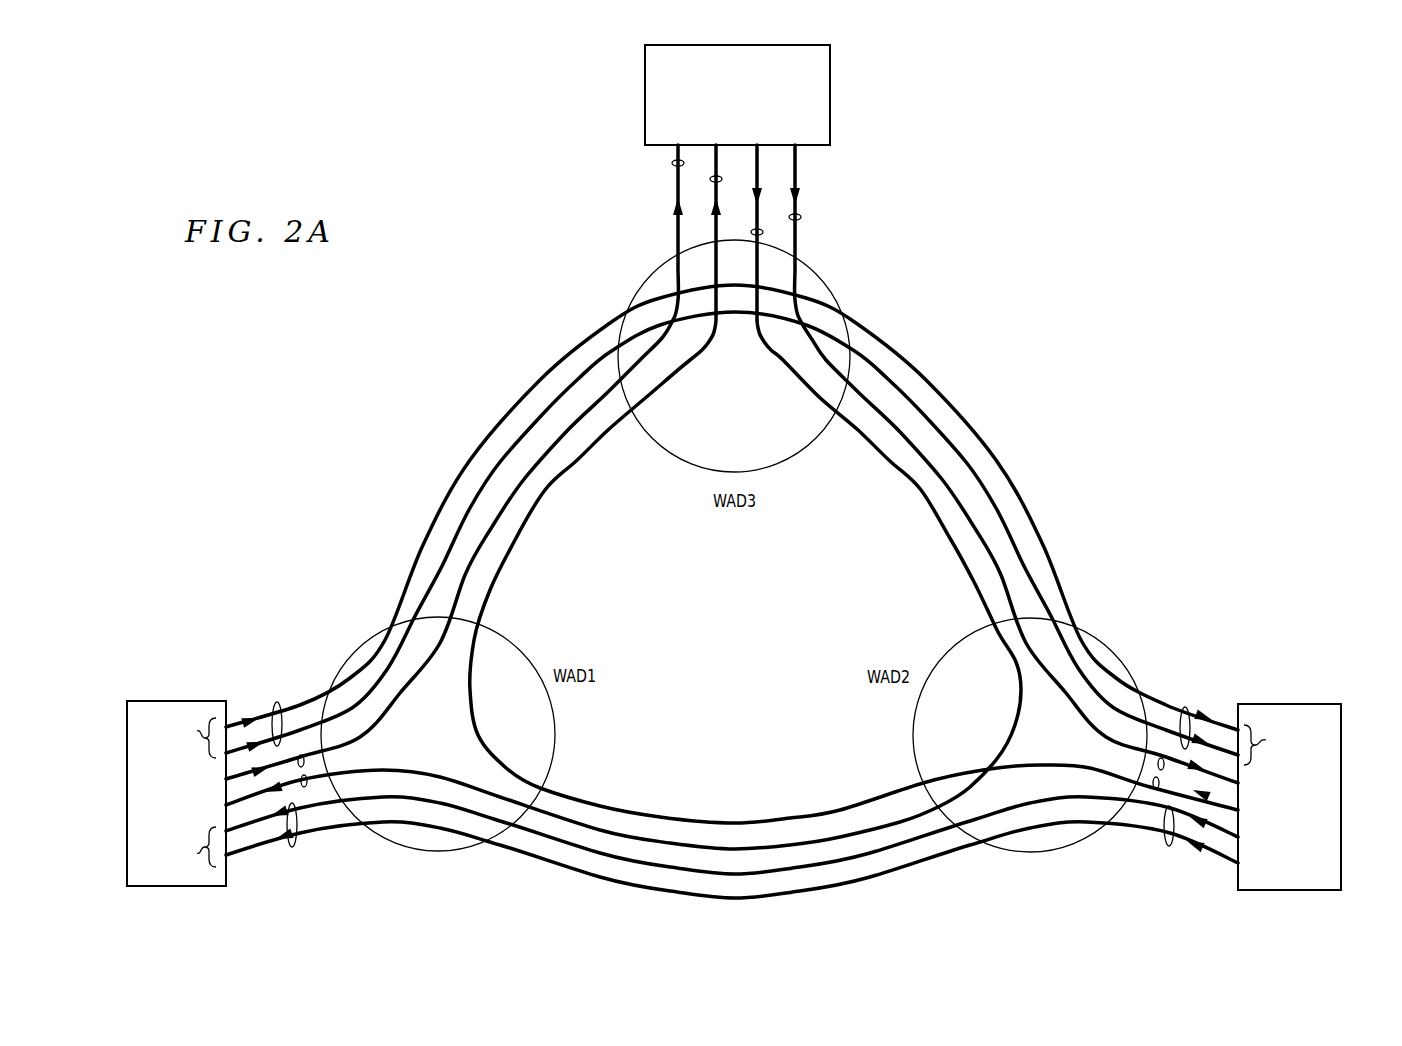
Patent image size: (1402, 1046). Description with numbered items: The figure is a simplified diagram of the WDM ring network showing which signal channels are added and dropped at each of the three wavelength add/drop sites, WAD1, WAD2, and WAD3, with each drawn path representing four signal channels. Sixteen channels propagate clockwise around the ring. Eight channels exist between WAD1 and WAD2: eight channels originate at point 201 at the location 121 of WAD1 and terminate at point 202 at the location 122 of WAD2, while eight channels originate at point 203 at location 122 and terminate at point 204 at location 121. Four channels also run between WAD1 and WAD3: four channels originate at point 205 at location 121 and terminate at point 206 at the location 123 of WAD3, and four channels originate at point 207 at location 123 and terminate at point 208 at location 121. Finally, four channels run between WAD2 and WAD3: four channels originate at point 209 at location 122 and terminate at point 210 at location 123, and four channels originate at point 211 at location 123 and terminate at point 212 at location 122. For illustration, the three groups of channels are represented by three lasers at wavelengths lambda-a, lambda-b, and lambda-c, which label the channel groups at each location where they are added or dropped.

The location of WAD1 121 is at (178, 700).
The location of WAD2 122 is at (1291, 703).
The location of WAD3 123 is at (830, 96).
The origination point of eight channels at WAD1 201 is at (276, 703).
The termination point of eight channels at WAD2 202 is at (1189, 707).
The origination point of eight channels at WAD2 203 is at (1168, 847).
The termination point of eight channels at WAD1 204 is at (293, 848).
The origination point of four channels at WAD1 205 is at (301, 755).
The termination point of four channels at WAD3 206 is at (672, 163).
The origination point of four channels at WAD3 207 is at (801, 217).
The termination point of four channels at WAD1 208 is at (307, 788).
The origination point of four channels at WAD2 209 is at (1155, 790).
The termination point of four channels at WAD3 210 is at (710, 179).
The origination point of four channels at WAD3 211 is at (763, 232).
The termination point of four channels at WAD2 212 is at (1161, 758).